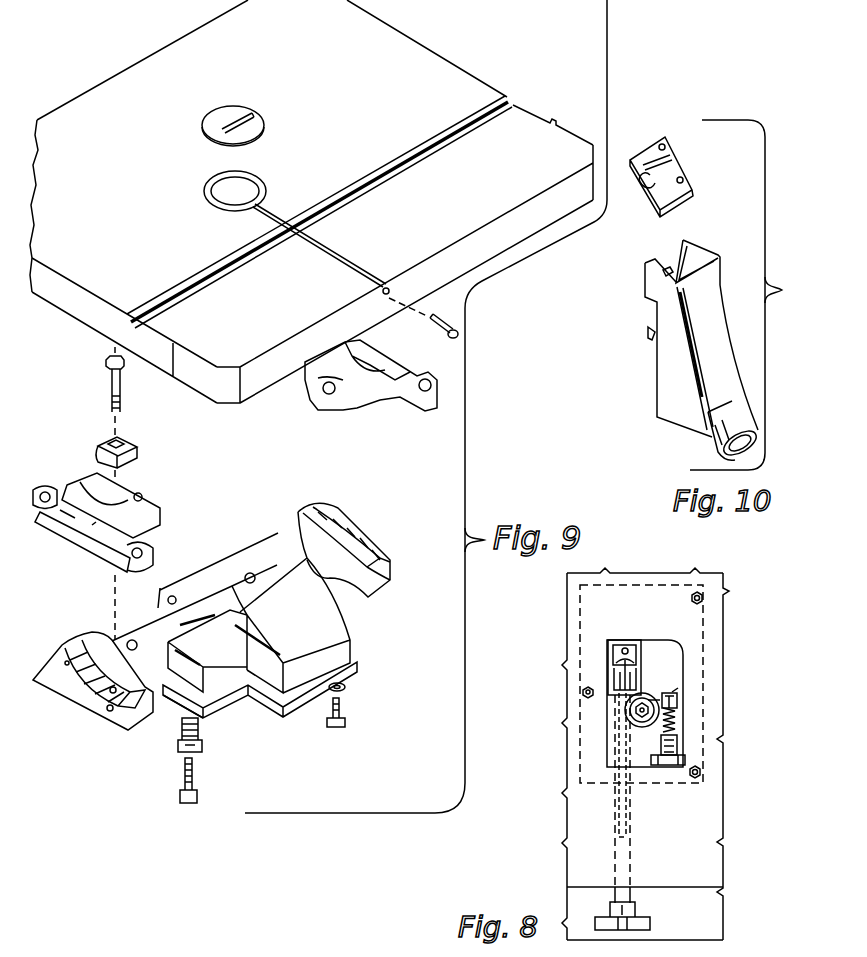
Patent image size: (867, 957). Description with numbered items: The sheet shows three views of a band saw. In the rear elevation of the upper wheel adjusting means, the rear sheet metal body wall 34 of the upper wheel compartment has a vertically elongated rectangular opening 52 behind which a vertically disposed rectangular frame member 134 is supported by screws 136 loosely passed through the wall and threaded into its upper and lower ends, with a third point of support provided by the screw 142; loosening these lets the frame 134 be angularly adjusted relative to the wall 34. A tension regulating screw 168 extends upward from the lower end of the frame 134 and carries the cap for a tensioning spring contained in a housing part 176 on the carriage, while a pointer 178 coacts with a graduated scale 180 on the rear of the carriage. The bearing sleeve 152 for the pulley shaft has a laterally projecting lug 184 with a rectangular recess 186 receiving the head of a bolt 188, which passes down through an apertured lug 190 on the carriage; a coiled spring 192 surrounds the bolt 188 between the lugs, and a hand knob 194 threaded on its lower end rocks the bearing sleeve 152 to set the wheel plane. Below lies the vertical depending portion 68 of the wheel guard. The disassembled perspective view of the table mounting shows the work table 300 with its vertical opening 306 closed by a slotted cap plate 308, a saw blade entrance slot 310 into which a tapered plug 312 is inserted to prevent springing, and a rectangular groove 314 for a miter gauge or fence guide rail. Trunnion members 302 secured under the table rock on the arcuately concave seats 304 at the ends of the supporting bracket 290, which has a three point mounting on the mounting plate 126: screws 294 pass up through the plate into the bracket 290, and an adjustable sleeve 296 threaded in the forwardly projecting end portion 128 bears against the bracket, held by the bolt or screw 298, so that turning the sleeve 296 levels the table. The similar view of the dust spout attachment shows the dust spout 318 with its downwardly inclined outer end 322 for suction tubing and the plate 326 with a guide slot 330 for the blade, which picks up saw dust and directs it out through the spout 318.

In FIG. 9, the work table 300 is at (163, 72).
In FIG. 9, the slotted cap plate 308 is at (250, 128).
In FIG. 9, the vertical opening 306 is at (240, 197).
In FIG. 9, the saw blade entrance slot 310 is at (333, 250).
In FIG. 9, the rectangular groove 314 is at (247, 263).
In FIG. 9, the tapered plug 312 is at (450, 320).
In FIG. 9, the trunnion members 302 is at (102, 553).
In FIG. 9, the arcuately concave seats 304 is at (390, 568).
In FIG. 9, the supporting bracket 290 is at (361, 629).
In FIG. 9, the mounting plate 126 is at (357, 668).
In FIG. 9, the screws 294 is at (343, 708).
In FIG. 9, the adjustable sleeve 296 is at (200, 735).
In FIG. 9, the forwardly projecting end portion 128 is at (173, 705).
In FIG. 9, the bolt or screw 298 is at (193, 783).
In FIG. 10, the plate 326 is at (670, 167).
In FIG. 10, the guide slot 330 is at (647, 183).
In FIG. 10, the dust spout 318 is at (717, 342).
In FIG. 10, the outer end 322 is at (712, 440).
In FIG. 8, the screws 136 is at (700, 596).
In FIG. 8, the housing part 176 is at (625, 640).
In FIG. 8, the pointer 178 is at (618, 680).
In FIG. 8, the graduated scale 180 is at (635, 690).
In FIG. 8, the rectangular openings 52 is at (683, 660).
In FIG. 8, the bolt 188 is at (670, 700).
In FIG. 8, the rectangular recess 186 is at (672, 692).
In FIG. 8, the laterally projecting lug 184 is at (677, 705).
In FIG. 8, the coiled spring 192 is at (677, 720).
In FIG. 8, the apertured lug 190 is at (670, 733).
In FIG. 8, the hand knob 194 is at (677, 765).
In FIG. 8, the screw 142 is at (583, 692).
In FIG. 8, the bearing sleeve 152 is at (630, 713).
In FIG. 8, the rectangular frame member 134 is at (578, 757).
In FIG. 8, the rear sheet metal body wall 34 is at (693, 813).
In FIG. 8, the tension regulating screw 168 is at (635, 898).
In FIG. 8, the vertical depending portion 68 is at (697, 918).